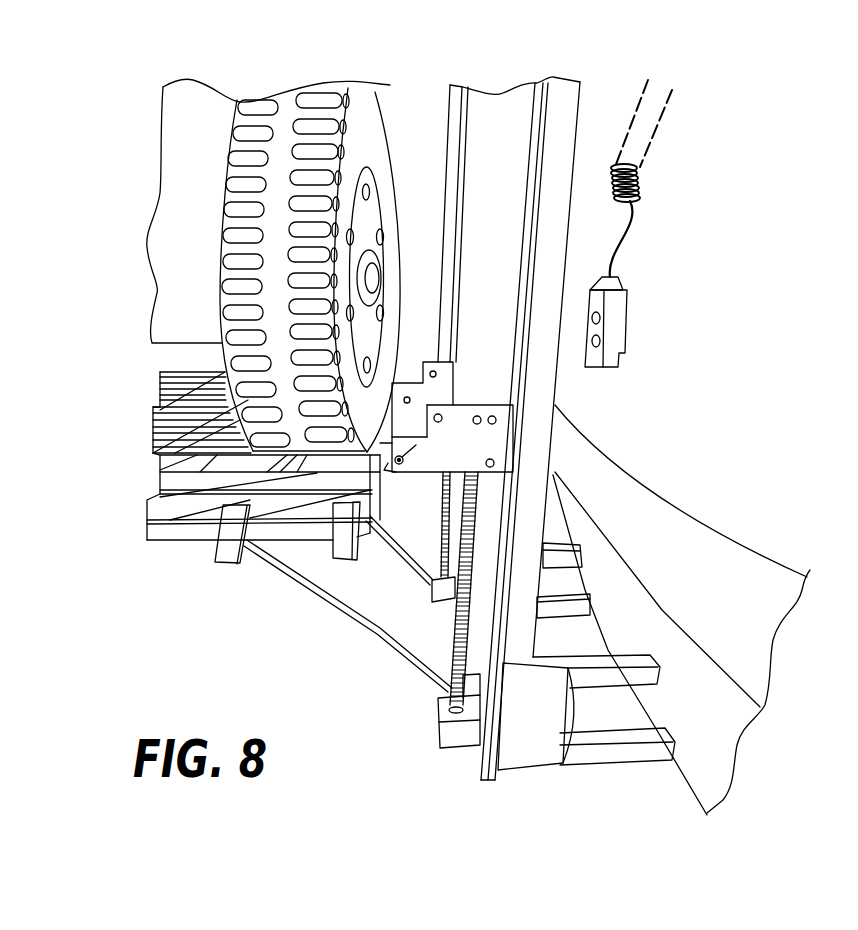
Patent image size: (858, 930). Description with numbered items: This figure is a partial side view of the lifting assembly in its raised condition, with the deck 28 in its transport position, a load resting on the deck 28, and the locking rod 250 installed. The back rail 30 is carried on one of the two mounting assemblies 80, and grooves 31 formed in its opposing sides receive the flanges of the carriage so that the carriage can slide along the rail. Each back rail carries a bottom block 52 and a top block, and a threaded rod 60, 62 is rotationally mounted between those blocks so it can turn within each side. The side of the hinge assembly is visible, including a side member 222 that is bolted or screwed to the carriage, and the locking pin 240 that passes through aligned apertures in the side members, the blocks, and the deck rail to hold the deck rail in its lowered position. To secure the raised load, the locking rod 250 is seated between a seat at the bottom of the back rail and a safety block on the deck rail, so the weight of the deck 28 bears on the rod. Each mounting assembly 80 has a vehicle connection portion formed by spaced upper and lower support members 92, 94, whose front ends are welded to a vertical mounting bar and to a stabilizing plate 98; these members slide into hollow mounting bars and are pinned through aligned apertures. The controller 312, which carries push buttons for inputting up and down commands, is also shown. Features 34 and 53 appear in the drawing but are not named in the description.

The deck 28 is at (192, 549).
The back rail 30 is at (588, 87).
The grooves 31 is at (487, 783).
The track rail 34 is at (503, 84).
The bottom block 52 is at (433, 590).
The lower support block 53 is at (440, 740).
The threaded rod 60 is at (457, 640).
The threaded rod 62 is at (443, 538).
The mounting assembly 80 is at (572, 537).
The upper support member 92 is at (570, 560).
The lower support member 94 is at (583, 610).
The stabilizing plate 98 is at (546, 731).
The side member 222 is at (478, 459).
The locking pin 240 is at (393, 465).
The locking rod 250 is at (355, 637).
The controller 312 is at (655, 324).